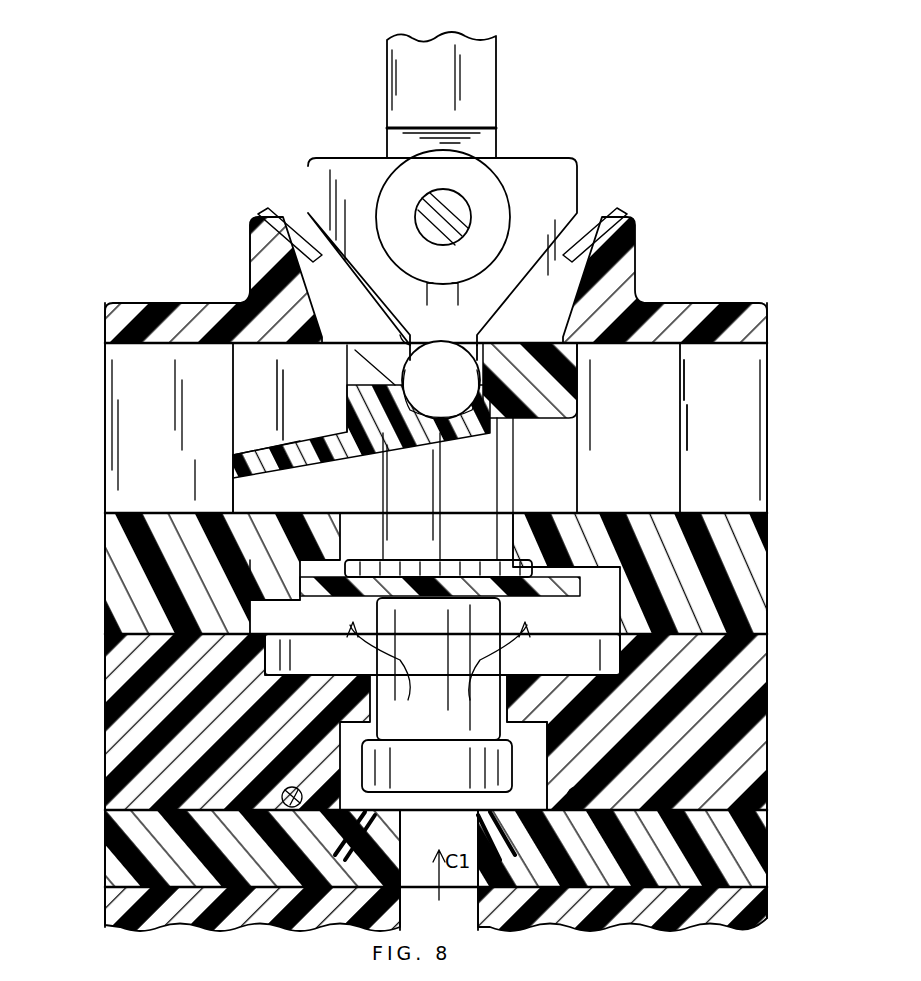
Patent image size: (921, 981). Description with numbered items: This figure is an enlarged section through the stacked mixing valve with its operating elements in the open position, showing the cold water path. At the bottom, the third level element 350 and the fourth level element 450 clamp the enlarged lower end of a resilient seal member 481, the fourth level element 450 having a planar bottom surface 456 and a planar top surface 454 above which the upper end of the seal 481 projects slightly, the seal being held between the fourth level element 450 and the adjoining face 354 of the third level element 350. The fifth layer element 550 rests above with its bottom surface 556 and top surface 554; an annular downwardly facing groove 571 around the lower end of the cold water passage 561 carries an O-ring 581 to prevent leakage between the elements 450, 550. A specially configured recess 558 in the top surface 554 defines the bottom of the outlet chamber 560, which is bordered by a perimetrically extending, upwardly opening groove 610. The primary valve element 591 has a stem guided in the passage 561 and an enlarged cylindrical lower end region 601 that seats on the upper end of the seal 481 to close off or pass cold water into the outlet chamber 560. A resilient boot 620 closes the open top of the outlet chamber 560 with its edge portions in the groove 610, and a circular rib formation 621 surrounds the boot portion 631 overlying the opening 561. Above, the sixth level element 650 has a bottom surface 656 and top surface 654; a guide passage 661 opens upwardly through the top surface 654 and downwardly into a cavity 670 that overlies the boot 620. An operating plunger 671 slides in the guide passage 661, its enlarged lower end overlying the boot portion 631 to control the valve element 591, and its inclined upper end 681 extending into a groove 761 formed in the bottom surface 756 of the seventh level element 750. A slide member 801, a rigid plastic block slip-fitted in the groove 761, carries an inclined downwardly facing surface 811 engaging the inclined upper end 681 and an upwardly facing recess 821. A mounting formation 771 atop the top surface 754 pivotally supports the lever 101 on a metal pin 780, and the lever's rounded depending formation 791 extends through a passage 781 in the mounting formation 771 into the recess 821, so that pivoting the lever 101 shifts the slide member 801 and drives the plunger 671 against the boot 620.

The lever 101 is at (490, 92).
The metal pin 780 is at (455, 205).
The passage 781 is at (310, 222).
The seventh level element 750 is at (740, 300).
The top surface 754 is at (150, 303).
The mounting formation 771 is at (250, 270).
The upwardly facing recess 821 is at (400, 345).
The rounded depending formation 791 is at (455, 375).
The groove 761 is at (105, 455).
The boot portion 631 is at (600, 513).
The slide member 801 is at (570, 355).
The inclined upper end 681 is at (520, 435).
The inclined downwardly facing surface 811 is at (245, 470).
The cavity 670 is at (235, 513).
The operating plunger 671 is at (520, 455).
The guide passage 661 is at (520, 490).
The resilient boot 620 is at (427, 560).
The circular rib formation 621 is at (290, 580).
The sixth level element 650 is at (770, 560).
The top surface 654 is at (115, 513).
The bottom surface 756 is at (115, 560).
The top surface 554 is at (115, 620).
The fifth layer element 550 is at (770, 672).
The bottom surface 656 is at (115, 650).
The top surface 454 is at (115, 810).
The groove 610 is at (505, 660).
The recess 558 is at (300, 660).
The outlet chamber 560 is at (464, 667).
The enlarged cylindrical lower end region 601 is at (510, 760).
The primary valve element 591 is at (530, 725).
The cold water passage 561 is at (520, 778).
The annular downwardly facing groove 571 is at (285, 797).
The O-ring 581 is at (285, 836).
The fourth level element 450 is at (770, 845).
The bottom surface 556 is at (115, 845).
The resilient seal member 481 is at (520, 845).
The surface 354 is at (115, 887).
The third level element 350 is at (770, 905).
The bottom surface 456 is at (115, 915).